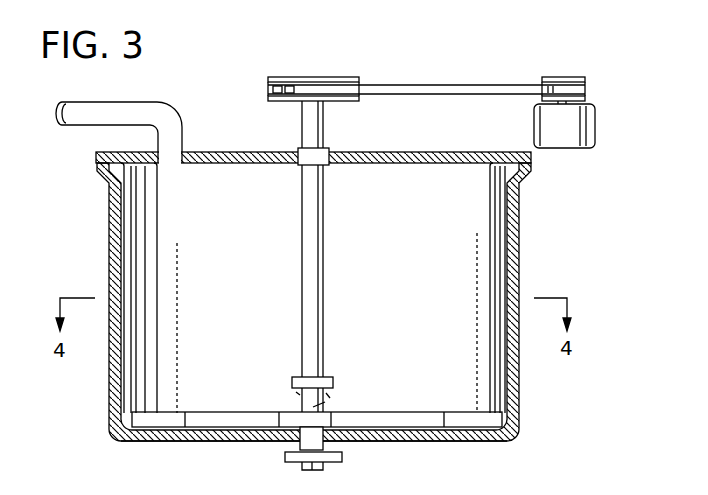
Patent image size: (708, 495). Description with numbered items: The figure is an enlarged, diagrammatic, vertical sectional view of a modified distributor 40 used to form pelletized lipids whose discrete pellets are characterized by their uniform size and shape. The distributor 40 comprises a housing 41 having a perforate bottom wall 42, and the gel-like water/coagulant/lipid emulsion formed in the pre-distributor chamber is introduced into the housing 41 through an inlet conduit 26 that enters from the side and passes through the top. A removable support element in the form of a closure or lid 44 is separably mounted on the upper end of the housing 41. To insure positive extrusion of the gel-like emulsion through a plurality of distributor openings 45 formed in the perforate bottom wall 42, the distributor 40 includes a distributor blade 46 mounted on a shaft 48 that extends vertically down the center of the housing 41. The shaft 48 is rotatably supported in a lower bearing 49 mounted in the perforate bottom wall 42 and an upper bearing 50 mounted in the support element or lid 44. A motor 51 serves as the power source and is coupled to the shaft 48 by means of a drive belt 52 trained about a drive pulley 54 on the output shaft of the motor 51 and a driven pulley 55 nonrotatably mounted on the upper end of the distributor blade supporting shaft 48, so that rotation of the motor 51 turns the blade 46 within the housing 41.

The inlet conduit 26 is at (143, 110).
The distributor 40 is at (580, 212).
The housing 41 is at (510, 283).
The perforate bottom wall 42 is at (466, 441).
The closure or lid 44 is at (416, 155).
The distributor openings 45 is at (233, 443).
The distributor blade 46 is at (293, 413).
The shaft 48 is at (314, 292).
The bearing 49 is at (308, 440).
The bearing 50 is at (298, 152).
The motor 51 is at (586, 131).
The drive belt 52 is at (449, 84).
The drive pulley 54 is at (560, 77).
The driven pulley 55 is at (319, 77).